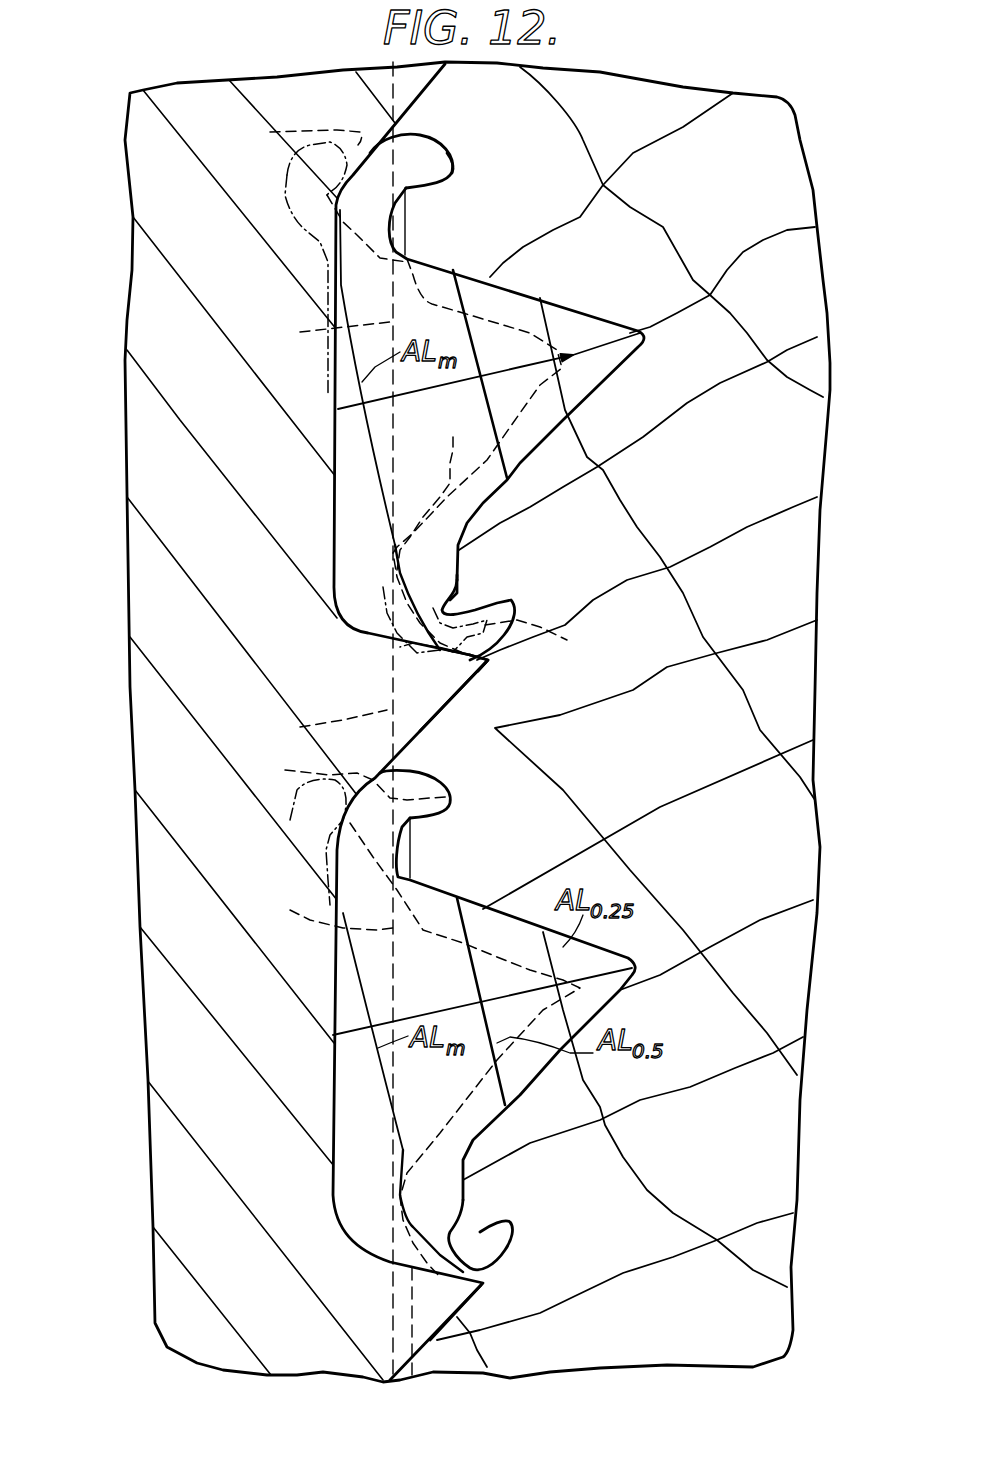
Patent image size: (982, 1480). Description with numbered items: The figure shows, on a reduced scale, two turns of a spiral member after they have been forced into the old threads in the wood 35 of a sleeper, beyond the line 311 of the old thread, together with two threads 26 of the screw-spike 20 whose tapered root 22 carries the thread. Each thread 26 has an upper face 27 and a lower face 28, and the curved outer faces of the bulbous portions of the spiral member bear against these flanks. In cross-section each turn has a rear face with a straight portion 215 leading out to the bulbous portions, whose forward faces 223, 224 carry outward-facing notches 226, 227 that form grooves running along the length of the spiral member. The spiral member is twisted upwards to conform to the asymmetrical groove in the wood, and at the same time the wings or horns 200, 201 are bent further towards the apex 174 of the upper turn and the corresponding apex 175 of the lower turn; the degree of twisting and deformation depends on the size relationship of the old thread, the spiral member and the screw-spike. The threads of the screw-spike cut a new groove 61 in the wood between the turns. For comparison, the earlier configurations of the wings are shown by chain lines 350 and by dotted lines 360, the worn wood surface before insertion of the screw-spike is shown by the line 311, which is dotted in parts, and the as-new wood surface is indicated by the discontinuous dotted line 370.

The screw-spike 20 is at (115, 461).
The root 22 is at (327, 1100).
The wood 35 is at (669, 112).
The wing 200 is at (463, 112).
The forward face 223 is at (454, 170).
The notch 226 is at (407, 189).
The apex 174 is at (647, 328).
The lower hook flank apex 175 is at (618, 997).
The forward face 224 is at (513, 607).
The notch 227 is at (489, 582).
The upper face 27 is at (485, 651).
The helical thread 26 is at (484, 688).
The new groove 61 is at (440, 674).
The lower face 28 is at (430, 777).
The wing 201 is at (537, 1187).
The line of the old thread 311 is at (573, 375).
The straight portion 215 is at (453, 445).
The chain lines 350 is at (280, 190).
The dotted lines 360 is at (470, 800).
The discontinuous dotted line 370 is at (376, 100).